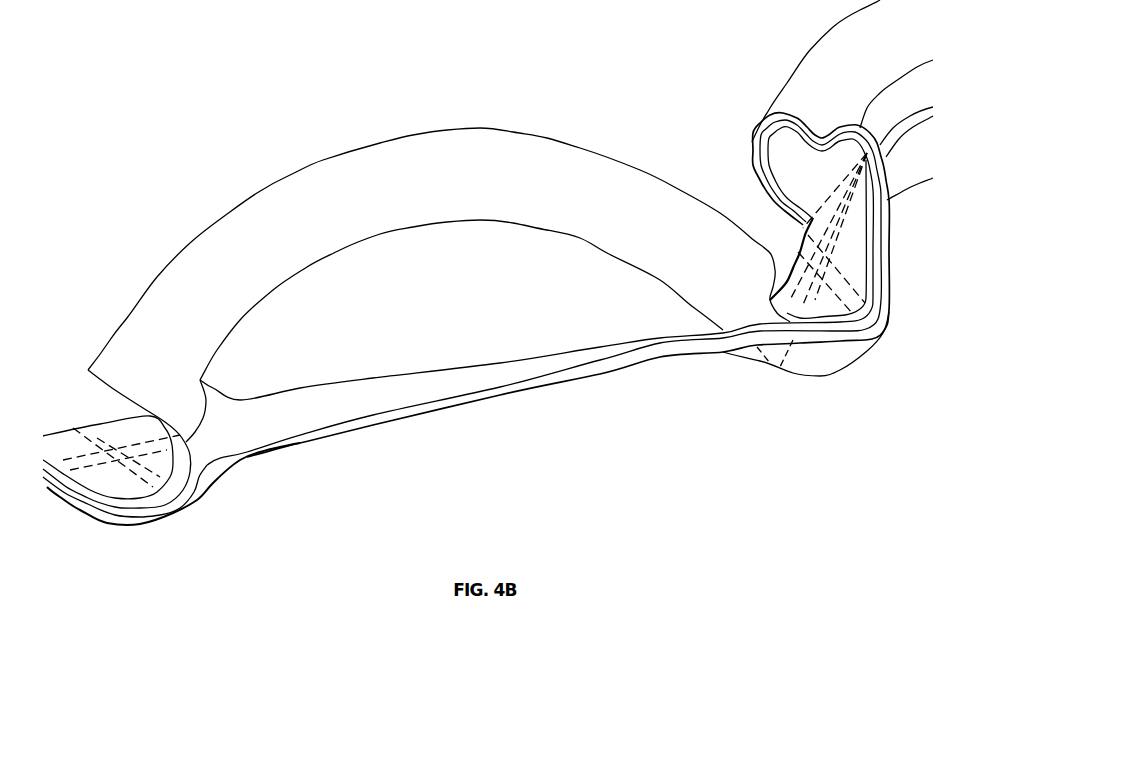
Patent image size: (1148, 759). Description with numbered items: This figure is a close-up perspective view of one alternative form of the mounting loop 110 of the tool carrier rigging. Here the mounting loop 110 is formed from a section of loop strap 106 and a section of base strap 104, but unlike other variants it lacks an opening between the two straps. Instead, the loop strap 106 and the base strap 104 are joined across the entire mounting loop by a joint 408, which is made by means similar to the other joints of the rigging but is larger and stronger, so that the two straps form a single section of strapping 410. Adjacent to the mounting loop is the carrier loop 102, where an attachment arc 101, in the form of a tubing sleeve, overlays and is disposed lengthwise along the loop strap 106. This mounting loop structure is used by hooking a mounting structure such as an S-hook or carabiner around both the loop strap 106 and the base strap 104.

The attachment arc 101 is at (425, 183).
The carrier loop 102 is at (264, 161).
The base strap 104 is at (138, 520).
The loop strap 106 is at (107, 430).
The mounting loop 110 is at (875, 382).
The joint 408 is at (817, 220).
The single section of strapping 410 is at (99, 539).